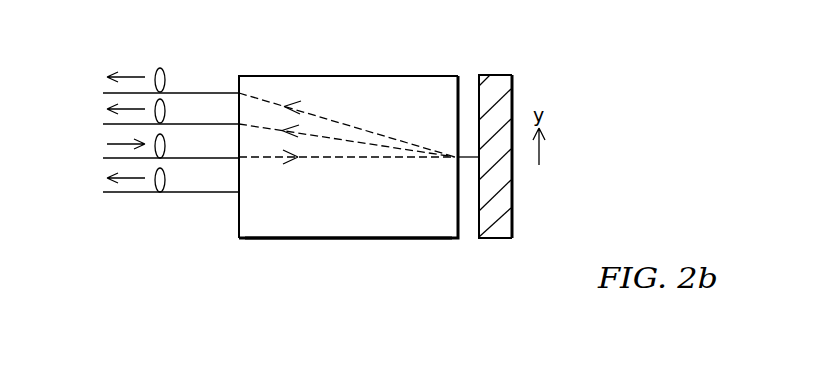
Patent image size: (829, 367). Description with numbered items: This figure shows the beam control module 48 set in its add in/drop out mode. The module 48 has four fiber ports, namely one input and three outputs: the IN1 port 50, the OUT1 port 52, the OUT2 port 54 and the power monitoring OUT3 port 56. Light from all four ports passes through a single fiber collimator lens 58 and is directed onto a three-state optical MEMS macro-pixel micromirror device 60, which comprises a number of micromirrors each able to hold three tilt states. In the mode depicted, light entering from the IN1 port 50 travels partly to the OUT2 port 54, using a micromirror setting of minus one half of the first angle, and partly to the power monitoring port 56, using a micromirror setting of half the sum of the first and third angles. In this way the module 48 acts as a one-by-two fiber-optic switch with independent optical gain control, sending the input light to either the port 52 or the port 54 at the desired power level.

The beam control module 48 is at (418, 242).
The IN1 port 50 is at (204, 158).
The OUT1 port 52 is at (196, 193).
The OUT2 port 54 is at (205, 124).
The OUT3 port 56 is at (192, 93).
The fiber collimator lens 58 is at (281, 239).
The 3-state optical MEMS macro-pixel micromirror device 60 is at (513, 218).